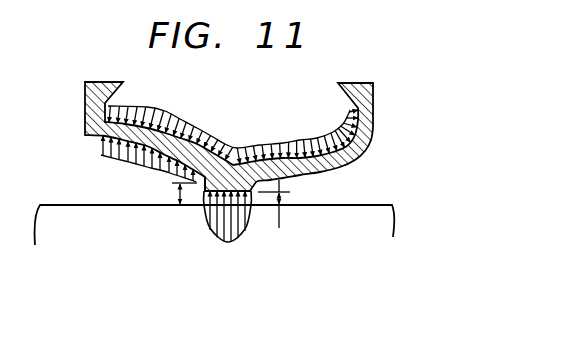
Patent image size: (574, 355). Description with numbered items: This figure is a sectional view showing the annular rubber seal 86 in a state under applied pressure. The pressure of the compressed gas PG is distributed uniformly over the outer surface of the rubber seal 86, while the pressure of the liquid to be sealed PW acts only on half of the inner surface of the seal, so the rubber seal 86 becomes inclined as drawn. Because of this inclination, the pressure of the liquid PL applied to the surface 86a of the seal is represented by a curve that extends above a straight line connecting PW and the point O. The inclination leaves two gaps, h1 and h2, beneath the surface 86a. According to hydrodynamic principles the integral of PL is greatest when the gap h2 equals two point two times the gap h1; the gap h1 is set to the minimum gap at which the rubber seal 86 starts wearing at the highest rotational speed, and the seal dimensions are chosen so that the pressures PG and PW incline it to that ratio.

The annular rubber seal 86 is at (373, 93).
The surface of the annular rubber seal 86a is at (207, 216).
The pressure of the compressed gas PG is at (233, 133).
The pressure of the liquid to be sealed PW is at (148, 164).
The pressure of the liquid applied to the surface of the seal PL is at (228, 229).
The gap h1 is at (271, 204).
The gap h2 is at (176, 207).